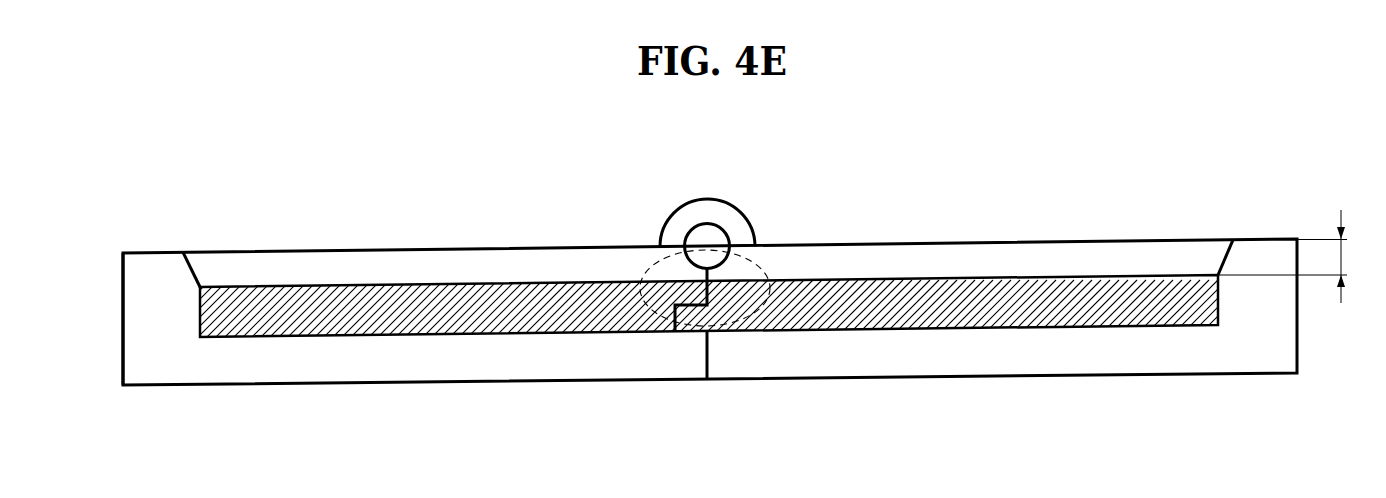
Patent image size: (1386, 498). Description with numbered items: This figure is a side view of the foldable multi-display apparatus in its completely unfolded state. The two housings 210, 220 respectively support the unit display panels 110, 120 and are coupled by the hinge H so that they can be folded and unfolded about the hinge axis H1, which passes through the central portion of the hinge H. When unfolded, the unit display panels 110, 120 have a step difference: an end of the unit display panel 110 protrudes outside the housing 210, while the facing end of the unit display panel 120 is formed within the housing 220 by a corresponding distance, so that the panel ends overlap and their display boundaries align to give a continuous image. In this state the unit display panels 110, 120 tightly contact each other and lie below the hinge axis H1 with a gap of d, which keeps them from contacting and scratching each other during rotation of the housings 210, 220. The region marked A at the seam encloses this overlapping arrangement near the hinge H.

The unit display panel 110 is at (1012, 348).
The unit display panel 120 is at (404, 346).
The housing 210 is at (1248, 345).
The housing 220 is at (130, 328).
The hinge H is at (737, 205).
The hinge axis H1 is at (715, 238).
The region A is at (653, 267).
The gap d is at (1295, 256).